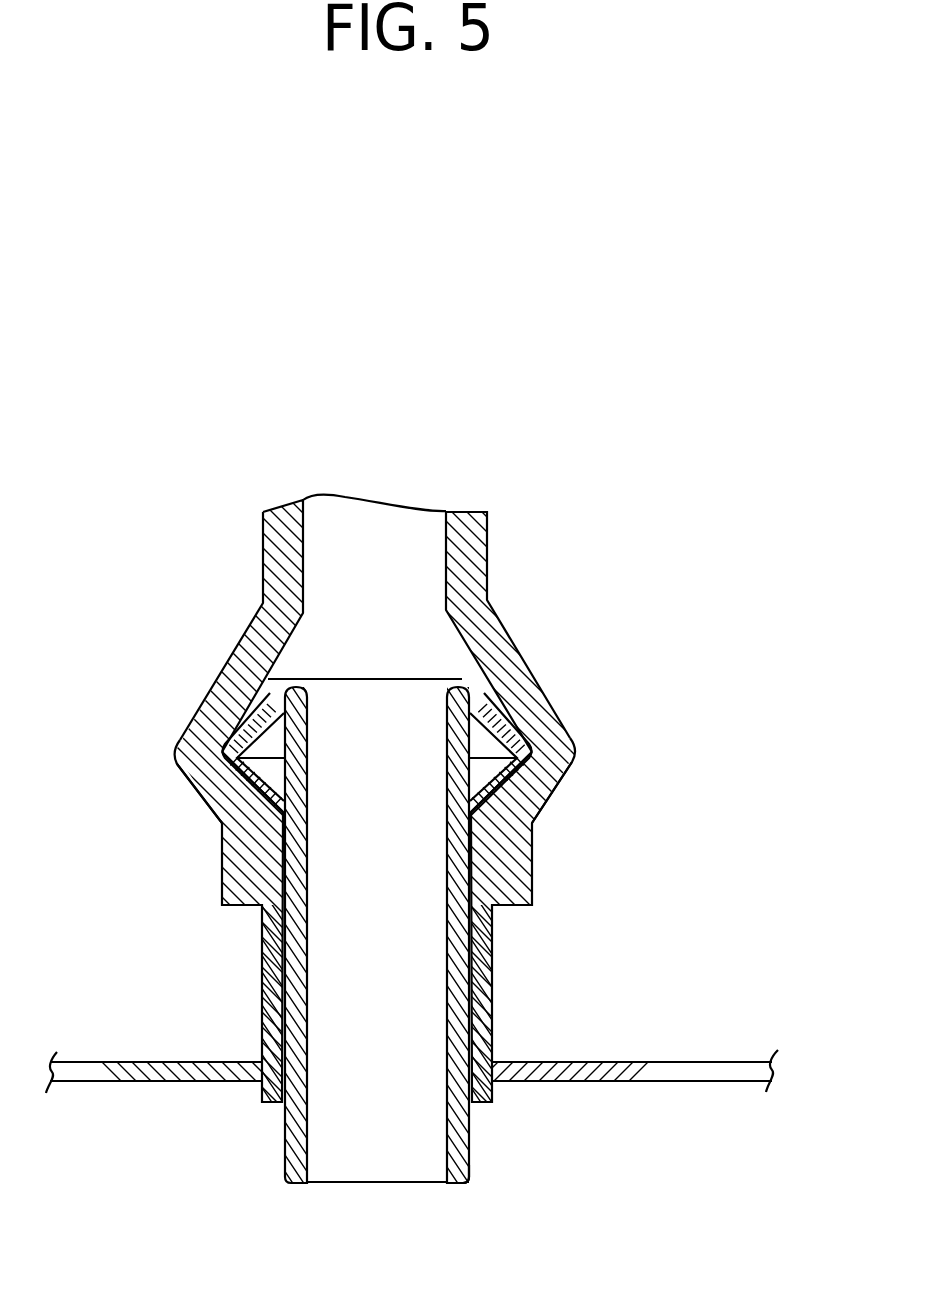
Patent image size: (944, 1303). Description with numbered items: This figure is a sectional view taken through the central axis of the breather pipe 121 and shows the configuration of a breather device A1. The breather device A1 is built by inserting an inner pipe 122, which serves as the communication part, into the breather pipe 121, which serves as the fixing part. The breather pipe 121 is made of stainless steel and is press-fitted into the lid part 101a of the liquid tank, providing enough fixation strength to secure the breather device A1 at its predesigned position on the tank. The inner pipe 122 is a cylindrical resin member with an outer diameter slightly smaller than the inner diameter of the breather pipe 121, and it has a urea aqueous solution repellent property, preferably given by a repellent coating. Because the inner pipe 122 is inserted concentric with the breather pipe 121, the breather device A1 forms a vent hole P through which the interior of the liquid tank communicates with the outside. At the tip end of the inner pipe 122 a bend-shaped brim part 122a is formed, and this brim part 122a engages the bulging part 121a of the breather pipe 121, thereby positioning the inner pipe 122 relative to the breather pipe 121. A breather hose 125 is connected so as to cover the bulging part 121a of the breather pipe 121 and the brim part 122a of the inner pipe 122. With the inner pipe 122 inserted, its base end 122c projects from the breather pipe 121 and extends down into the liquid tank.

The breather device A1 is at (172, 572).
The breather hose 125 is at (487, 548).
The breather pipe 121 is at (492, 957).
The bulging part 121a is at (577, 770).
The inner pipe 122 is at (470, 1118).
The brim part 122a is at (505, 680).
The base end 122c is at (452, 1185).
The lid part 101a is at (688, 1058).
The vent hole P is at (382, 1175).